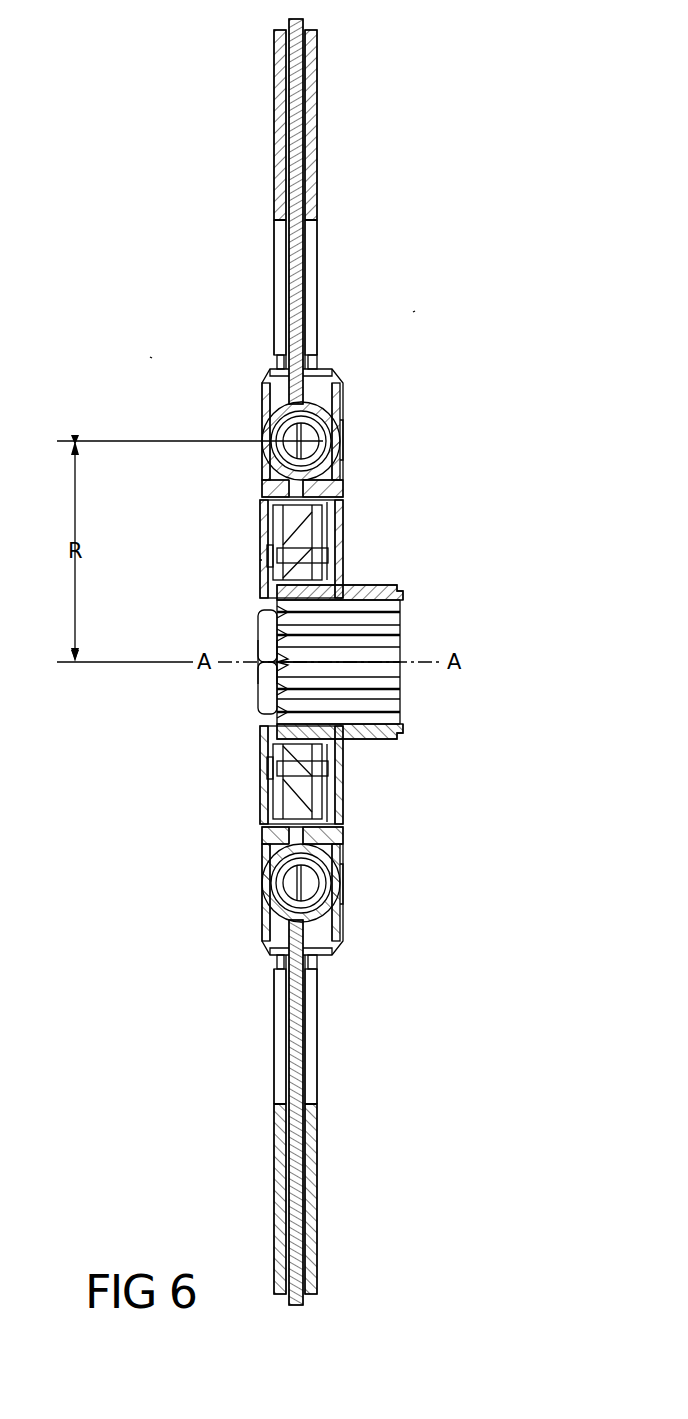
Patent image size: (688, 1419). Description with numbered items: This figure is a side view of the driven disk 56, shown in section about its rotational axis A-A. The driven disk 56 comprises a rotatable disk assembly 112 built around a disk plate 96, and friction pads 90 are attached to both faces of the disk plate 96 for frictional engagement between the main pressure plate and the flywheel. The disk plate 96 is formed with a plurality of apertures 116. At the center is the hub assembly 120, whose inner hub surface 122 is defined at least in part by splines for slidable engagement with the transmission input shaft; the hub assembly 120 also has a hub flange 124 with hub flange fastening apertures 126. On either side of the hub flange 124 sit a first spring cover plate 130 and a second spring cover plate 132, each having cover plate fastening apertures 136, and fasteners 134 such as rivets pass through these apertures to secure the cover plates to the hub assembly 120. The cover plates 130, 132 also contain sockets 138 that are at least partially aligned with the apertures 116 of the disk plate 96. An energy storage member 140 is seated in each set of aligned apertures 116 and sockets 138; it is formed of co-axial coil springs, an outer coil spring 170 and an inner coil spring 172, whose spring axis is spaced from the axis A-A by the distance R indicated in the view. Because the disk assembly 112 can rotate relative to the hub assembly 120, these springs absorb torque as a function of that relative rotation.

The driven disk 56 is at (150, 357).
The friction pads 90 is at (280, 88).
The disk plate 96 is at (296, 293).
The disk assembly 112 is at (413, 312).
The apertures 116 is at (316, 345).
The hub assembly 120 is at (262, 560).
The inner hub surface 122 is at (265, 592).
The hub flange 124 is at (280, 503).
The hub flange fastening apertures 126 is at (340, 545).
The first spring cover plate 130 is at (268, 379).
The second spring cover plate 132 is at (335, 374).
The fasteners 134 is at (338, 556).
The cover plate fastening apertures 136 is at (270, 548).
The sockets 138 is at (262, 410).
The energy storage member 140 is at (346, 431).
The outer coil spring 170 is at (335, 468).
The inner coil spring 172 is at (322, 443).